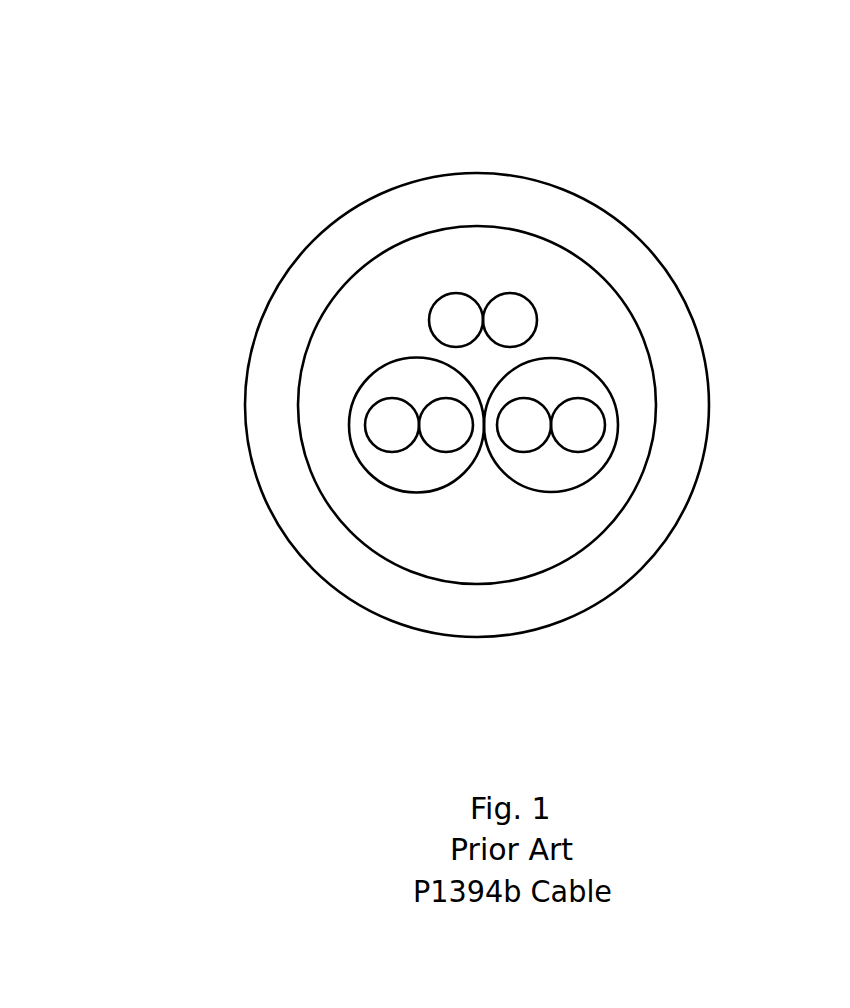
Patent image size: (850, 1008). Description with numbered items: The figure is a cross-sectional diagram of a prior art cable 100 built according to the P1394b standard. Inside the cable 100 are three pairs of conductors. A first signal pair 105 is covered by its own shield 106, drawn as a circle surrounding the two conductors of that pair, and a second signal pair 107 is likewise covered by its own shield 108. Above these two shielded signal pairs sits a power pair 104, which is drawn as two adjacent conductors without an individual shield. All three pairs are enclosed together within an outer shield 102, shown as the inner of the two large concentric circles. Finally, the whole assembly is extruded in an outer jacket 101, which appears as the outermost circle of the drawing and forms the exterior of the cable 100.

The cable 100 is at (134, 75).
The outer jacket 101 is at (313, 240).
The outer shield 102 is at (298, 407).
The power pair 104 is at (530, 297).
The first signal pair 105 is at (444, 453).
The shield 106 is at (372, 473).
The second signal pair 107 is at (605, 427).
The shield 108 is at (595, 375).